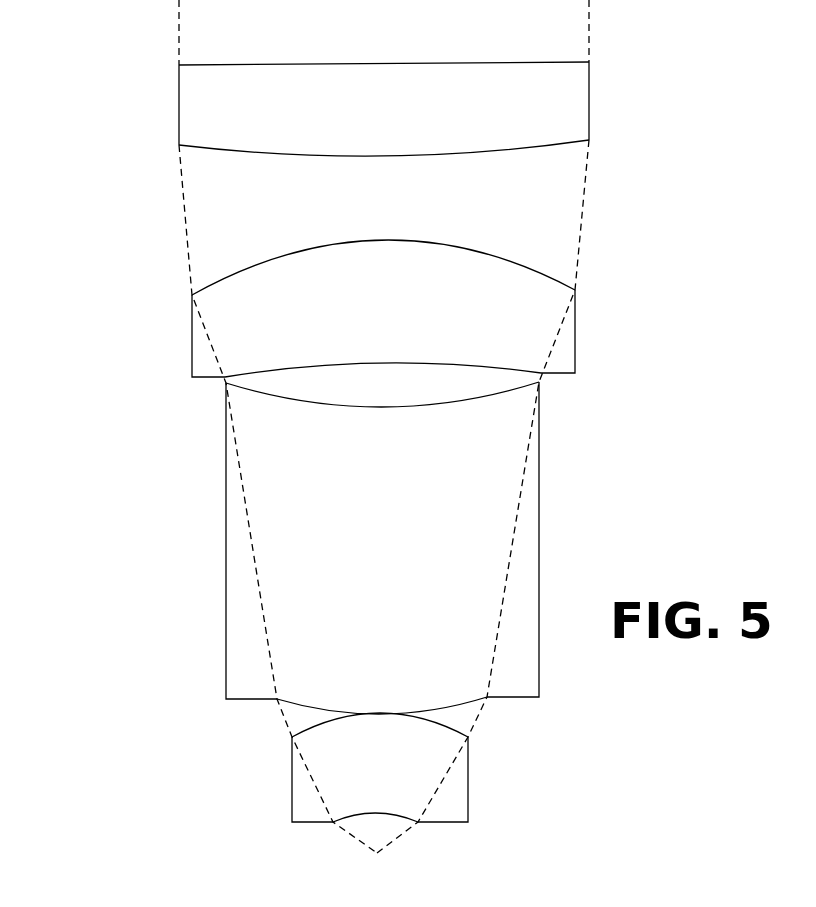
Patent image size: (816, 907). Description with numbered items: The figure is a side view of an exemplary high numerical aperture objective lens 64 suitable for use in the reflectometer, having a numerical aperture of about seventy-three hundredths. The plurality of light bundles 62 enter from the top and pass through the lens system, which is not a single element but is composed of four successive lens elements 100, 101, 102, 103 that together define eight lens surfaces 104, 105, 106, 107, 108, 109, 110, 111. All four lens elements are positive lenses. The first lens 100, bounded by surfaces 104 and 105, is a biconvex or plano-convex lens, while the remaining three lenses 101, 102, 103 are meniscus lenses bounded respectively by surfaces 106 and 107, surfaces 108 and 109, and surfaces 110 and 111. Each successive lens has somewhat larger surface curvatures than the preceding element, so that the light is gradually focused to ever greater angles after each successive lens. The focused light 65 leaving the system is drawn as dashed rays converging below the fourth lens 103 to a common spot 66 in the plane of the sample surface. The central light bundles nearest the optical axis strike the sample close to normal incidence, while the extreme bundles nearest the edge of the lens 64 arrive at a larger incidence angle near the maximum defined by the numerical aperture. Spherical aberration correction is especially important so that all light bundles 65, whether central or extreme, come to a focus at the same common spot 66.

The light bundles 62 is at (514, 15).
The high numerical aperture lens 64 is at (88, 198).
The focused light 65 is at (371, 830).
The common spot 66 is at (395, 843).
The first lens element 100 is at (416, 107).
The second lens element 101 is at (418, 307).
The third lens element 102 is at (422, 544).
The fourth lens element 103 is at (422, 767).
The lens surface 104 is at (333, 65).
The lens surface 105 is at (355, 156).
The lens surface 106 is at (413, 243).
The lens surface 107 is at (440, 366).
The lens surface 108 is at (358, 407).
The lens surface 109 is at (303, 705).
The lens surface 110 is at (313, 727).
The lens surface 111 is at (340, 822).